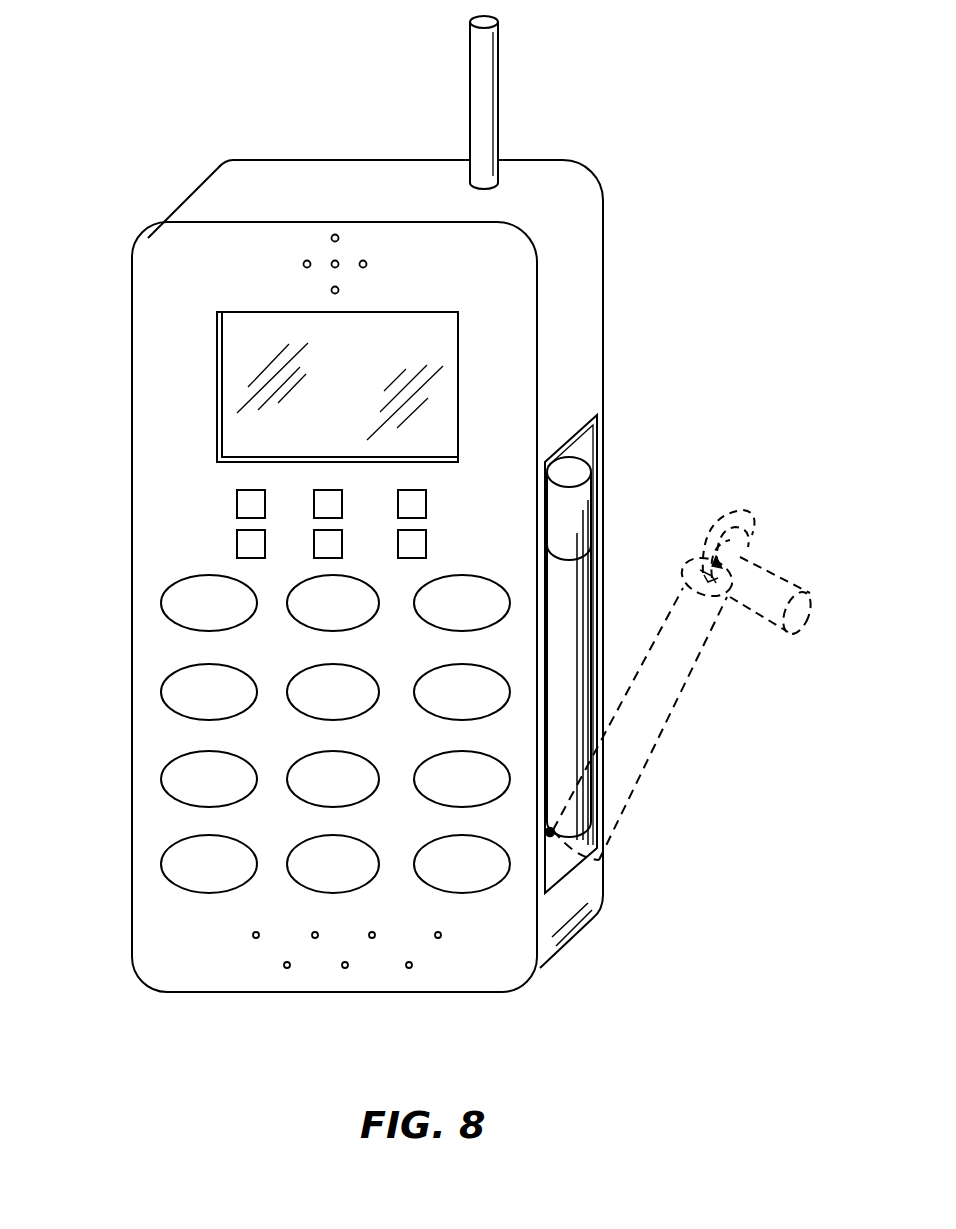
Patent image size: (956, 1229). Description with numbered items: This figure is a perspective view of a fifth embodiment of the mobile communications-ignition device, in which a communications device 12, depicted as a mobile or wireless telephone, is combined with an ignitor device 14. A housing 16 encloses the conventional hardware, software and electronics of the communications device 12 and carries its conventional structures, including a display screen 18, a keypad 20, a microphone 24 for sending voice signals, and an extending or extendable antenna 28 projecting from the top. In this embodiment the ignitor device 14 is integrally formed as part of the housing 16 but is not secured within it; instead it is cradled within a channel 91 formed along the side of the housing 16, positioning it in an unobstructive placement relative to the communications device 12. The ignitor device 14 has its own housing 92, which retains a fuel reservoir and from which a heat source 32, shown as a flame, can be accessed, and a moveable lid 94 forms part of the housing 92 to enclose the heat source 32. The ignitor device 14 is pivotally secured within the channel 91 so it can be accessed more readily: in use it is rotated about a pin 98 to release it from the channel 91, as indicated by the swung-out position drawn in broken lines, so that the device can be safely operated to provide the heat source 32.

The communications device 12 is at (112, 615).
The ignitor device 14 is at (650, 495).
The housing 16 is at (592, 258).
The display screen 18 is at (408, 322).
The keypad 20 is at (148, 740).
The microphone 24 is at (322, 965).
The antenna 28 is at (487, 68).
The heat source 32 is at (762, 516).
The channel 91 is at (587, 440).
The housing 92 is at (570, 605).
The moveable lid 94 is at (577, 500).
The pin 98 is at (545, 834).